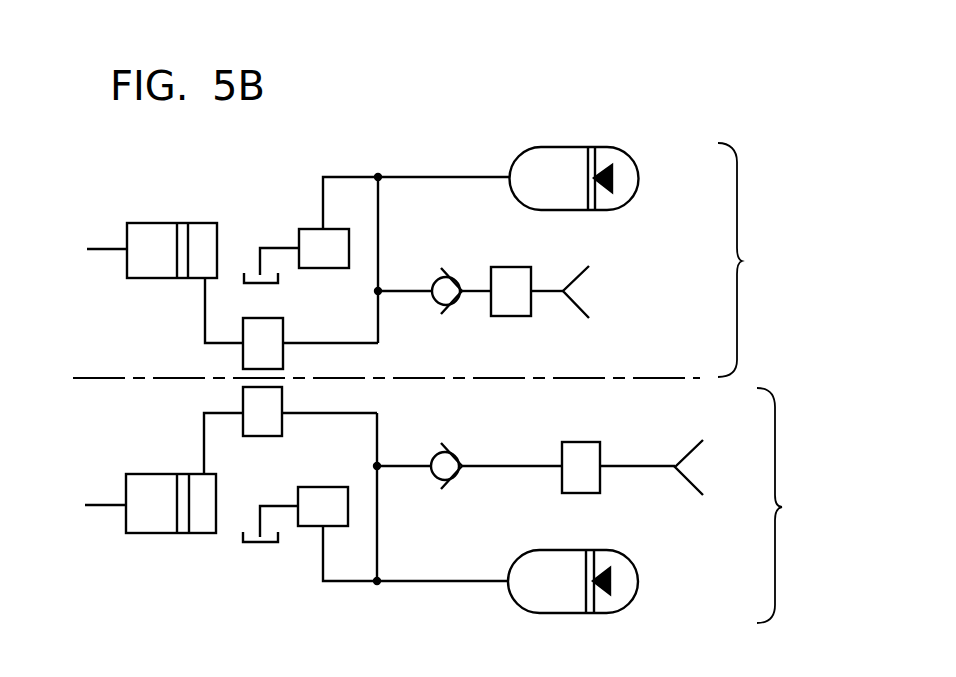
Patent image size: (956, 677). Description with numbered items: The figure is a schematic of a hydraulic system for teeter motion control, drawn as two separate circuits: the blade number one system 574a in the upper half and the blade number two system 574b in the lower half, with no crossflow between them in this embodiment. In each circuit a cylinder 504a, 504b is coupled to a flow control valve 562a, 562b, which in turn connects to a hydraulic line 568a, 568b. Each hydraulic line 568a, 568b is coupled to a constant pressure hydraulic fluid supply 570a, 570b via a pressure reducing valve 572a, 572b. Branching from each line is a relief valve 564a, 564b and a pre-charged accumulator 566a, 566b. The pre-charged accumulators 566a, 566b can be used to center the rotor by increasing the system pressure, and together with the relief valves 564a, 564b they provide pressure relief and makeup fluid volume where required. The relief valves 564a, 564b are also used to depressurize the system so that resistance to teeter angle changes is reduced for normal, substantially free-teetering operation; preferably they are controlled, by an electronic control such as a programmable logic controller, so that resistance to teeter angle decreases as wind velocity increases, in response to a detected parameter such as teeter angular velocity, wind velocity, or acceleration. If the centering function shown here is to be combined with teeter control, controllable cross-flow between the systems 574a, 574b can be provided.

The cylinder 504a is at (133, 223).
The flow control valve 562a is at (243, 357).
The relief valve 564a is at (308, 229).
The pre-charged accumulator 566a is at (557, 147).
The hydraulic line 568a is at (378, 230).
The constant pressure hydraulic fluid supply 570a is at (603, 292).
The pressure reducing valve 572a is at (531, 308).
The blade number one system 574a is at (764, 260).
The cylinder 504b is at (133, 474).
The flow control valve 562b is at (243, 402).
The relief valve 564b is at (312, 527).
The pre-charged accumulator 566b is at (560, 613).
The hydraulic line 568b is at (377, 532).
The constant pressure hydraulic fluid supply 570b is at (713, 467).
The pressure reducing valve 572b is at (562, 480).
The blade number two system 574b is at (805, 505).